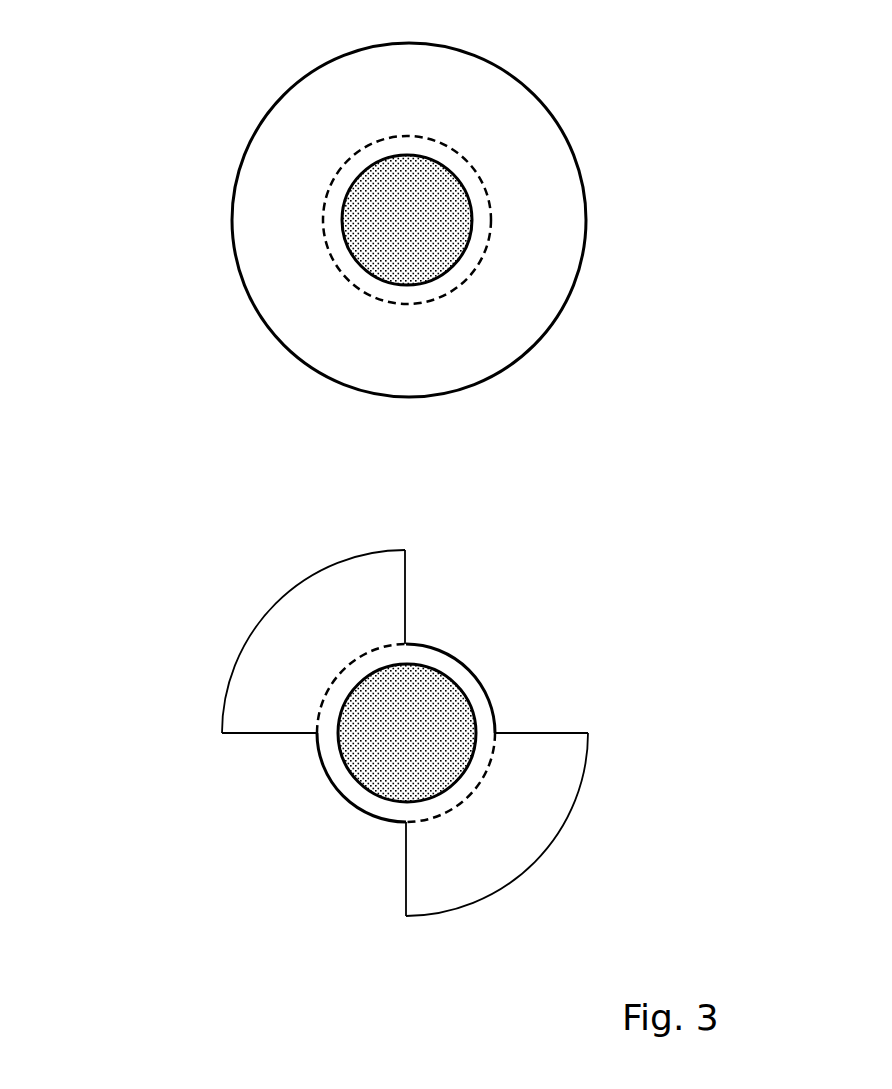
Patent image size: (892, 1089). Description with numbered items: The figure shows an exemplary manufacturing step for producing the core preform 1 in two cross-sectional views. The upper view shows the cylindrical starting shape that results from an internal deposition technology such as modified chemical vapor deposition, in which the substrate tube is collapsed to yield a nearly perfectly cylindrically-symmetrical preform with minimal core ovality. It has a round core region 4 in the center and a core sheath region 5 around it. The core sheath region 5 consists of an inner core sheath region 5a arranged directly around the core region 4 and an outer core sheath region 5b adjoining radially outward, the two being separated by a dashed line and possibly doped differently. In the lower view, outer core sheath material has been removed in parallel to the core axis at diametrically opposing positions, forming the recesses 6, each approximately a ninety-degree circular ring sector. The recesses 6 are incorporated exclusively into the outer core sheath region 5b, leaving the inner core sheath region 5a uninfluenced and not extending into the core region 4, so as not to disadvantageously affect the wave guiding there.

The core preform 1 is at (240, 92).
The core region 4 is at (400, 187).
The core sheath region 5 is at (498, 95).
The inner core sheath region 5a is at (482, 255).
The outer core sheath region 5b is at (527, 198).
The recesses 6 is at (490, 627).